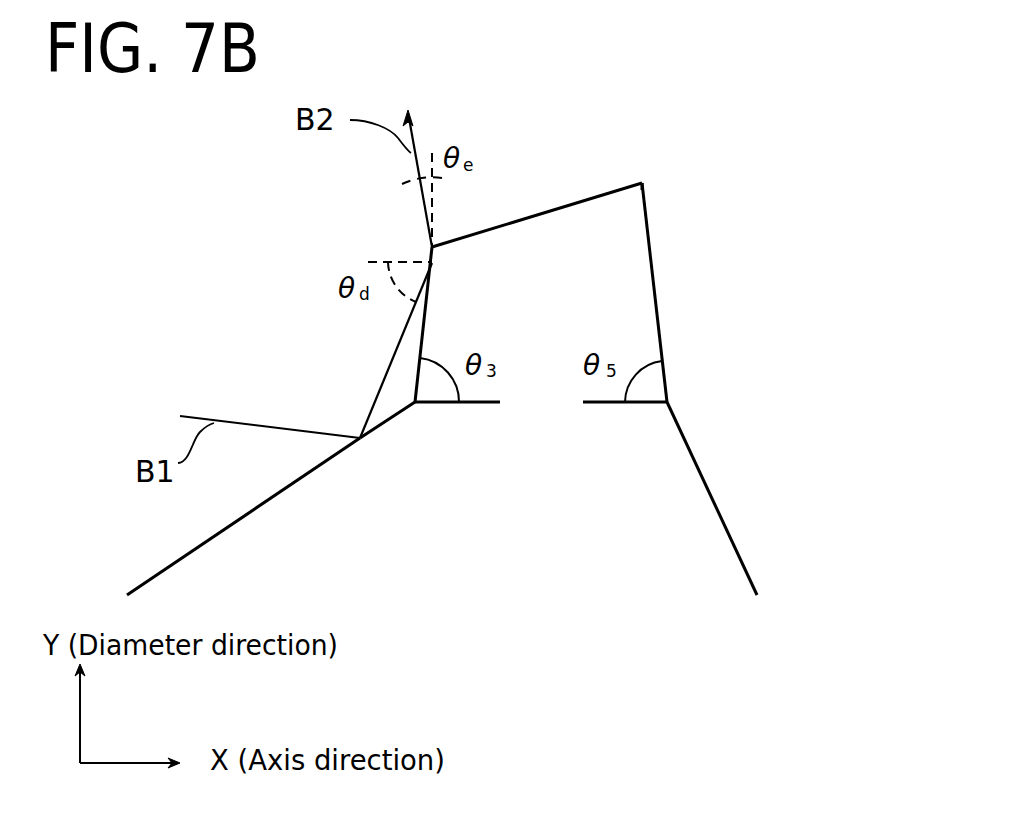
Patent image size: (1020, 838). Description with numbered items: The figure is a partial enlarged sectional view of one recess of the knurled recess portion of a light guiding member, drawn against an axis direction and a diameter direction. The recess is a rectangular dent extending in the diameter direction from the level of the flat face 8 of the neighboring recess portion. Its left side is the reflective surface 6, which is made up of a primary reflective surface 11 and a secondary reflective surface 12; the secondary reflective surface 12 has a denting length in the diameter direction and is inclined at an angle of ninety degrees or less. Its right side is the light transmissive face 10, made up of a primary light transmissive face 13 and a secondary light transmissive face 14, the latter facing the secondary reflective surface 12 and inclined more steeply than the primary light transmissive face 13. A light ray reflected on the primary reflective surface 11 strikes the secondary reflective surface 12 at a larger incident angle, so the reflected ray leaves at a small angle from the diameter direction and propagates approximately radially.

The reflective surface 6 is at (279, 421).
The flat face 8 is at (600, 193).
The light transmissive face 10 is at (755, 389).
The primary reflective surface 11 is at (339, 453).
The secondary reflective surface 12 is at (414, 376).
The primary light transmissive face 13 is at (732, 498).
The secondary light transmissive face 14 is at (658, 320).